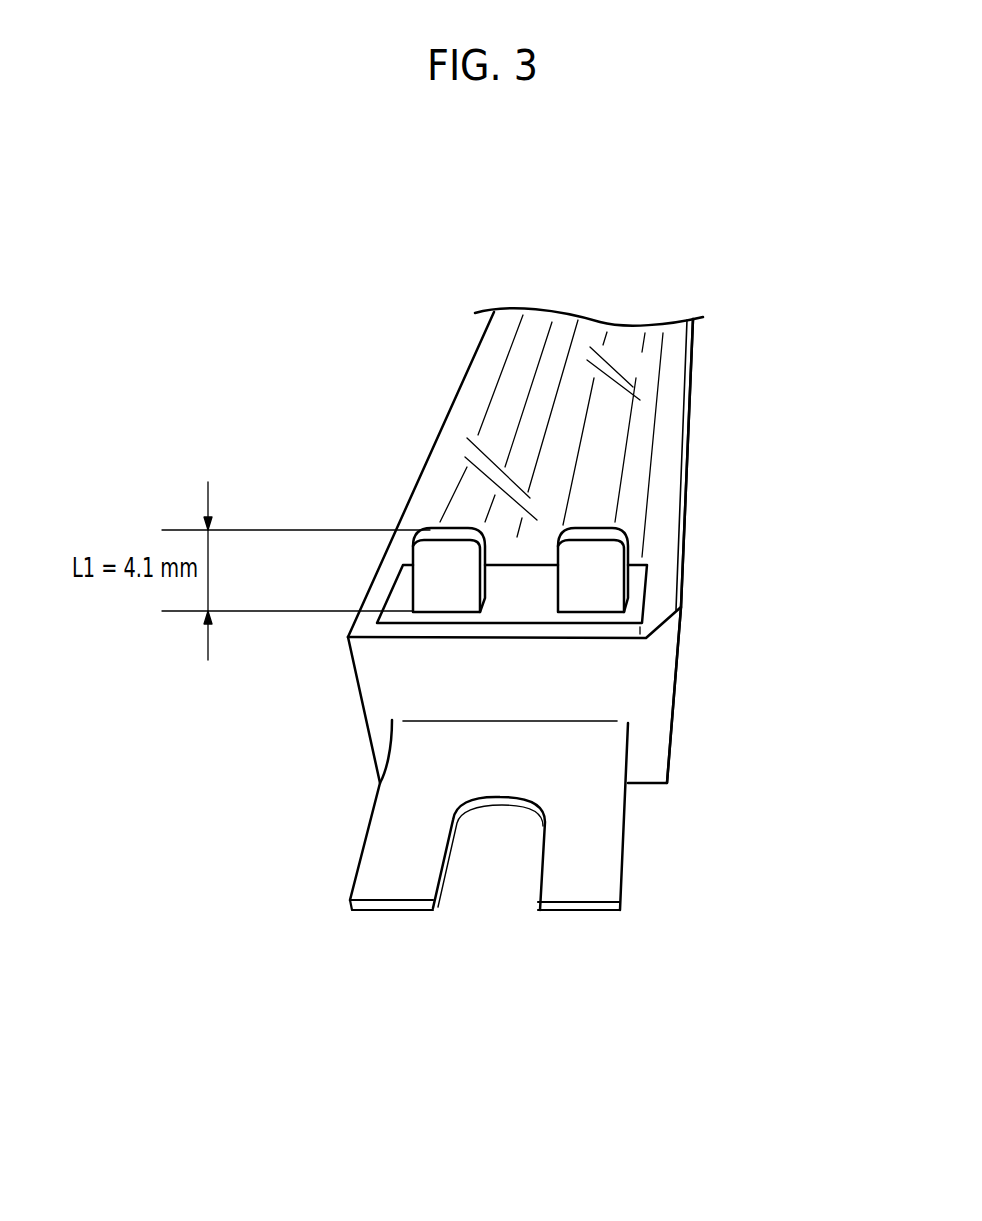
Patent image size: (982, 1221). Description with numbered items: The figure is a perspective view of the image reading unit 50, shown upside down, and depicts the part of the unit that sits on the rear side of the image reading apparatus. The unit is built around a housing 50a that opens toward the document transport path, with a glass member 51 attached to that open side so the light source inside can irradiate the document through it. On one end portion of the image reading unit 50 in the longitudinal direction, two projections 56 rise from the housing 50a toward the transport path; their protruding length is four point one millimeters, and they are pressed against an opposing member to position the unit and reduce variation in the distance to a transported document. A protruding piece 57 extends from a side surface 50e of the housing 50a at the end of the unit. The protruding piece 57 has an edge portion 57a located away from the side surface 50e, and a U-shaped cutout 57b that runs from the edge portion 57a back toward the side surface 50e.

The image reading unit 50 is at (740, 273).
The glass member 51 is at (642, 445).
The projections 56 is at (437, 582).
The housing 50a is at (677, 697).
The side surface 50e is at (377, 677).
The protruding piece 57 is at (600, 853).
The edge portion 57a is at (375, 911).
The U-shaped cutout 57b is at (485, 924).